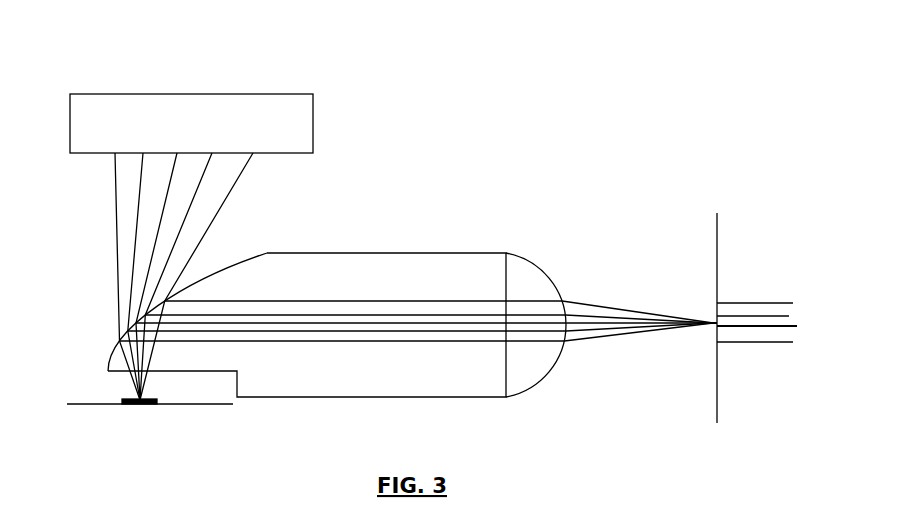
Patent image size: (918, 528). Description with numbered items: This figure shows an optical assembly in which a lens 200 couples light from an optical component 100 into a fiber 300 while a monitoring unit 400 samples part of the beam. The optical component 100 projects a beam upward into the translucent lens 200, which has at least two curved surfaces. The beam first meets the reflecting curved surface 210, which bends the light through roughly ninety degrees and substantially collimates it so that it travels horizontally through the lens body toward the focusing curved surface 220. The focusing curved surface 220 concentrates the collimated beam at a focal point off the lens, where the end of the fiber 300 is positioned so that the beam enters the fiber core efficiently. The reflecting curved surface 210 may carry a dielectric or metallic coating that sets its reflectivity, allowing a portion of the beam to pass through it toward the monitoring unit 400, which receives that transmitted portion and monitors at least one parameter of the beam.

The optical component 100 is at (150, 421).
The lens 200 is at (357, 307).
The reflecting curved surface 210 is at (215, 294).
The focusing curved surface 220 is at (556, 307).
The fiber 300 is at (769, 318).
The monitoring unit 400 is at (223, 110).